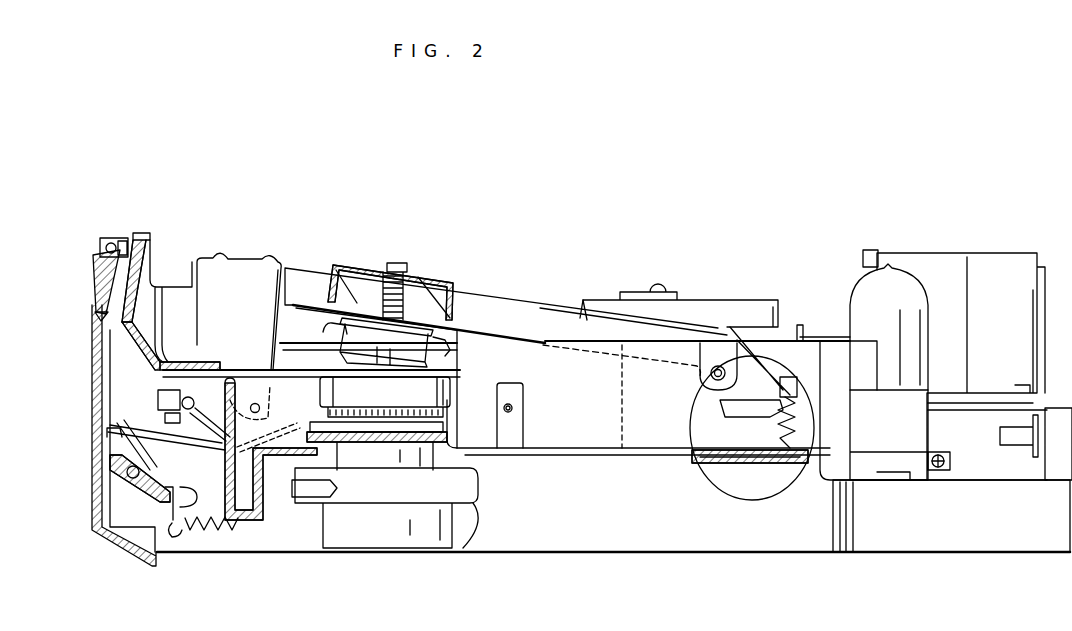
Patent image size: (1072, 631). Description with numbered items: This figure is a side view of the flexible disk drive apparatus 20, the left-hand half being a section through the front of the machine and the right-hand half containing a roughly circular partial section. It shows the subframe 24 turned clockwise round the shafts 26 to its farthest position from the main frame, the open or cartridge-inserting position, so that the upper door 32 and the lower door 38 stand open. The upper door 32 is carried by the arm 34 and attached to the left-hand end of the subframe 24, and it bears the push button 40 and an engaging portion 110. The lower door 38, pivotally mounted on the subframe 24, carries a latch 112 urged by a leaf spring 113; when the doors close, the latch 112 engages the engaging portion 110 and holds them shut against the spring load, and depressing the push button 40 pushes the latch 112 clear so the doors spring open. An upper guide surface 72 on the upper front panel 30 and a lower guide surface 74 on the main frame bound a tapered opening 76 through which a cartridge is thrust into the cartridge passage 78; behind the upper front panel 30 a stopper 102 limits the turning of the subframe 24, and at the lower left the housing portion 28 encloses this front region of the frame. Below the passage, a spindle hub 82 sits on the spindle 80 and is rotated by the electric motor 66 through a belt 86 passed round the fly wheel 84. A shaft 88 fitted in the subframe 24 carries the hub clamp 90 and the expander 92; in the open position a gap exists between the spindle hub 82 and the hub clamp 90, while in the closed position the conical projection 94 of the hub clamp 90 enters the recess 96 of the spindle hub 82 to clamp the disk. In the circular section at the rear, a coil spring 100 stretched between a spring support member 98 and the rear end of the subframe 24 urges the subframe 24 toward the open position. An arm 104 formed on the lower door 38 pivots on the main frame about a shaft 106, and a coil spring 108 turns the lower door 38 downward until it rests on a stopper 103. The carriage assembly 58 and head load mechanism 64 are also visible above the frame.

The flexible disk drive apparatus 20 is at (697, 217).
The subframe 24 is at (505, 300).
The shafts 26 is at (712, 378).
The housing 28 is at (110, 552).
The upper front panel 30 is at (148, 234).
The upper door 32 is at (103, 245).
The arm 34 is at (243, 265).
The lower door 38 is at (135, 482).
The push button 40 is at (97, 262).
The carriage assembly 58 is at (930, 254).
The head load mechanism 64 is at (691, 298).
The electric motor 66 is at (867, 250).
The upper guide surface 72 is at (127, 350).
The lower guide surface 74 is at (105, 383).
The opening 76 is at (182, 368).
The cartridge passage 78 is at (285, 374).
The spindle 80 is at (483, 440).
The spindle hub 82 is at (320, 390).
The fly wheel 84 is at (312, 503).
The belt 86 is at (293, 488).
The shaft 88 is at (396, 262).
The hub clamp 90 is at (323, 330).
The expander 92 is at (354, 328).
The conical projection 94 is at (447, 348).
The recess 96 is at (447, 394).
The spring support member 98 is at (757, 464).
The coil spring 100 is at (780, 430).
The stopper 102 is at (178, 283).
The stopper 103 is at (170, 505).
The arm 104 is at (215, 468).
The shaft 106 is at (255, 390).
The coil spring 108 is at (200, 530).
The engaging portion 110 is at (97, 308).
The latch 112 is at (105, 433).
The leaf spring 113 is at (136, 450).